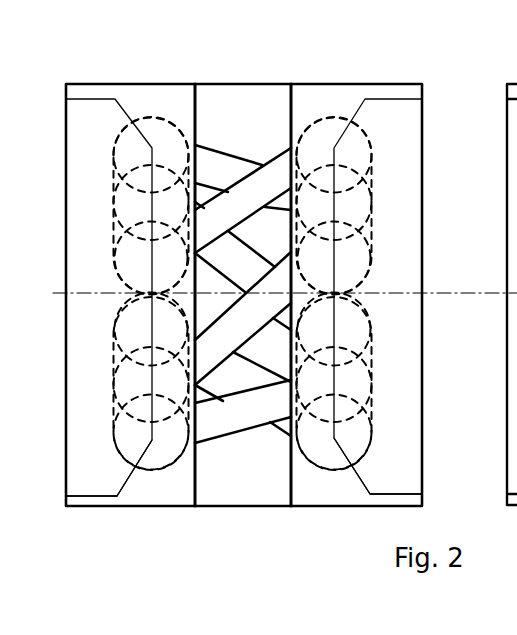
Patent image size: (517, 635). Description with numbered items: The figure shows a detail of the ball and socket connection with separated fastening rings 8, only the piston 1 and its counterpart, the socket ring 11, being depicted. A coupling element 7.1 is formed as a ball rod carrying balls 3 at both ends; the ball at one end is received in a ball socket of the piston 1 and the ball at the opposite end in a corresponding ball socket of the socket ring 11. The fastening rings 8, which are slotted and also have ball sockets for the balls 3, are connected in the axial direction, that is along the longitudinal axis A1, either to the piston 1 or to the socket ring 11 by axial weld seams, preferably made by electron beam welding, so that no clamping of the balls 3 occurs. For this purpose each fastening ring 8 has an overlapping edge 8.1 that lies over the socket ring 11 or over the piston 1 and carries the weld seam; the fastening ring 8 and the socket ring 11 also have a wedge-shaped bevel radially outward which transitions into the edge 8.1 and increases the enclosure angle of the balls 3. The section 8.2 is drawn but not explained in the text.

The piston 1 is at (82, 240).
The balls 3 is at (318, 140).
The fastening rings 8 is at (142, 108).
The edge 8.1 is at (92, 500).
The inclined channel section 8.2 is at (130, 477).
The coupling element 7.1 is at (228, 422).
The socket ring 11 is at (389, 478).
The longitudinal axis A1 is at (52, 293).